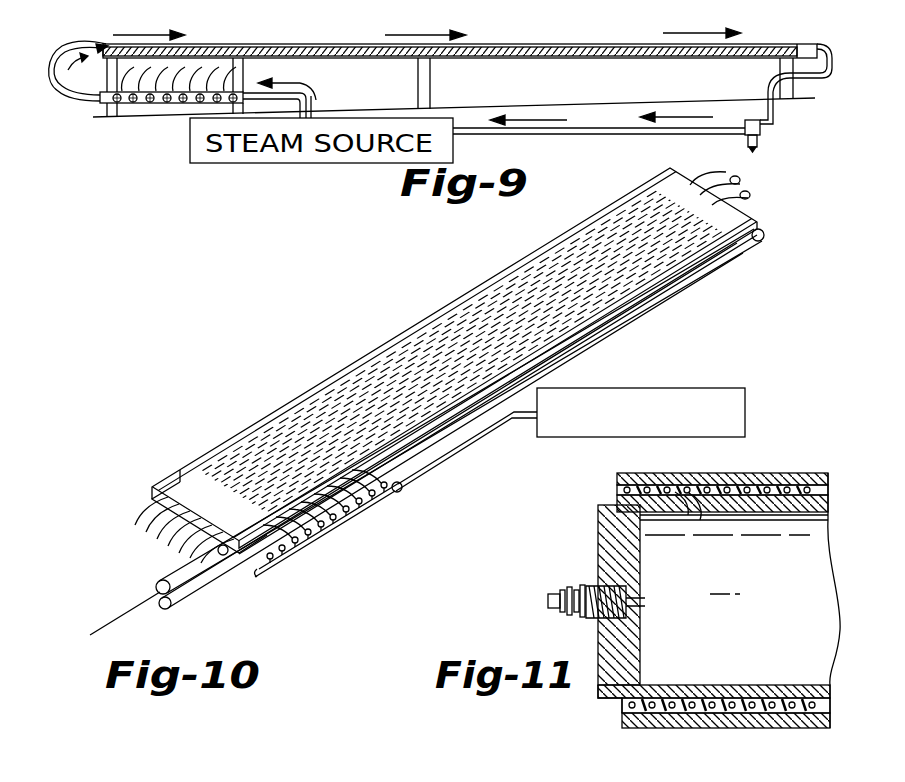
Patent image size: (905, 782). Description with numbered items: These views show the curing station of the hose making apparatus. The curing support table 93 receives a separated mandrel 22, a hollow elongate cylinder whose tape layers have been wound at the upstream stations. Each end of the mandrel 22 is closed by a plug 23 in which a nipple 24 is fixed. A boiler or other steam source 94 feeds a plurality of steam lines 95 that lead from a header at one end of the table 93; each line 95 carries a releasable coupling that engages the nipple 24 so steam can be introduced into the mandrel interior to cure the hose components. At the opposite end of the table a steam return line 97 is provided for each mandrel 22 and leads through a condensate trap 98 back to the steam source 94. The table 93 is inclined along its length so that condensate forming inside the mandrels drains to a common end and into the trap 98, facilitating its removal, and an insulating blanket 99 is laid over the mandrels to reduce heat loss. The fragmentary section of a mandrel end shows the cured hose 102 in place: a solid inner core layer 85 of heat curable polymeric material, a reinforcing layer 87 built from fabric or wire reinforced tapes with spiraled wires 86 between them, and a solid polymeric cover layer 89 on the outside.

In FIG. 11, the mandrel 22 is at (607, 503).
In FIG. 11, the plug 23 is at (606, 543).
In FIG. 11, the nipple 24 is at (576, 590).
In FIG. 11, the inner core layer 85 is at (745, 502).
In FIG. 11, the wires 86 is at (700, 495).
In FIG. 11, the reinforcing layer 87 is at (617, 490).
In FIG. 11, the cover layer 89 is at (640, 474).
In FIG. 9, the curing support table 93 is at (570, 44).
In FIG. 10, the curing support table 93 is at (273, 409).
In FIG. 10, the steam source 94 is at (680, 388).
In FIG. 9, the steam lines 95 is at (96, 52).
In FIG. 10, the steam lines 95 is at (193, 538).
In FIG. 9, the steam return line 97 is at (770, 88).
In FIG. 10, the steam return line 97 is at (726, 172).
In FIG. 9, the condensate trap 98 is at (760, 133).
In FIG. 10, the insulating blanket 99 is at (213, 460).
In FIG. 9, the cured hose 102 is at (320, 44).
In FIG. 11, the cured hose 102 is at (690, 583).